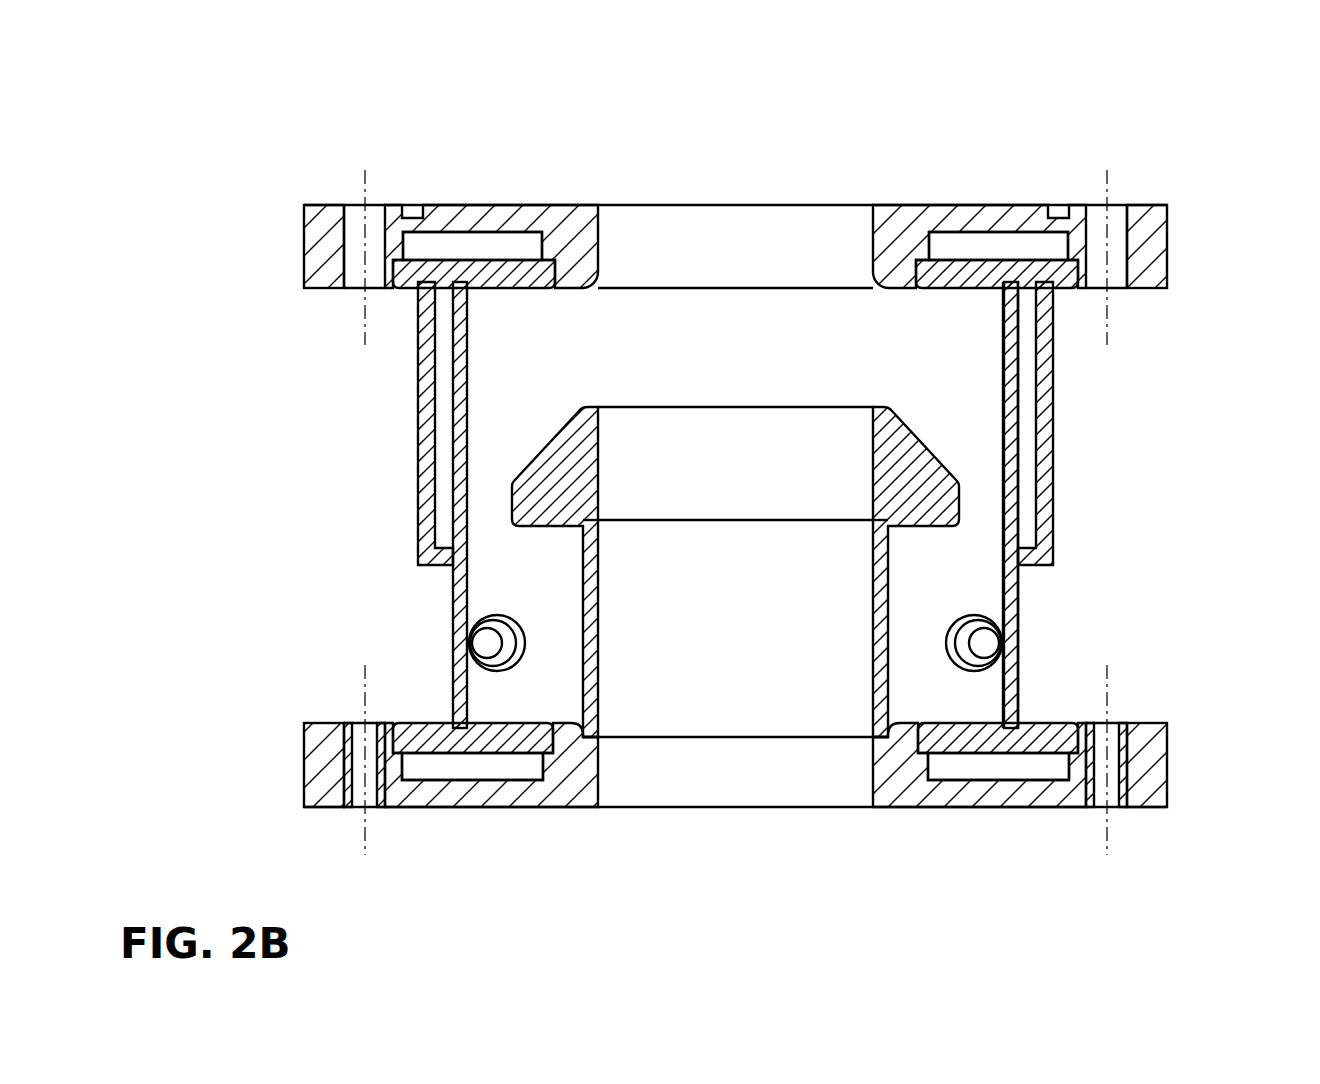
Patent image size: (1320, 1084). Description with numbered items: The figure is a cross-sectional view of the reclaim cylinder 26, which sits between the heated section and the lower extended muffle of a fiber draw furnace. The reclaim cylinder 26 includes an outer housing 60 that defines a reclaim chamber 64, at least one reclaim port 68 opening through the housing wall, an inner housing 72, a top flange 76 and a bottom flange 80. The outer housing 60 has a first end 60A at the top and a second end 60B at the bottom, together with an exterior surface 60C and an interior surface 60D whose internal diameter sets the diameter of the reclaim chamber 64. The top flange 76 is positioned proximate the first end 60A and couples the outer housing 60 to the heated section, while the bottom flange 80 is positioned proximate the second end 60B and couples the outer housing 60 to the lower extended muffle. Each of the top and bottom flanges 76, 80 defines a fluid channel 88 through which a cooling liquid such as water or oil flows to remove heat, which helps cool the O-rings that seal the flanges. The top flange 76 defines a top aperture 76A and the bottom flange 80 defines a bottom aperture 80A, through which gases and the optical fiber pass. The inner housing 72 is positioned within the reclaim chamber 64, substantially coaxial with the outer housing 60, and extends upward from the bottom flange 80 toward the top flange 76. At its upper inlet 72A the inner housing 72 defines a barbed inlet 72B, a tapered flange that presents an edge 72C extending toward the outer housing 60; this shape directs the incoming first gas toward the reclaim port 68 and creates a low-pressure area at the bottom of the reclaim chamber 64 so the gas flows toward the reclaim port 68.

The reclaim cylinder 26 is at (1015, 130).
The outer housing 60 is at (767, 505).
The first end of the outer housing 60A is at (413, 331).
The second end of the outer housing 60B is at (1021, 703).
The exterior surface of the outer housing 60C is at (1018, 592).
The interior surface of the outer housing 60D is at (1003, 565).
The reclaim chamber 64 is at (928, 377).
The reclaim port 68 is at (488, 643).
The inner housing 72 is at (857, 530).
The inlet of the inner housing 72A is at (751, 408).
The barbed inlet 72B is at (538, 491).
The edge of the barbed inlet 72C is at (962, 497).
The top flange 76 is at (735, 190).
The top aperture 76A is at (722, 232).
The bottom flange 80 is at (735, 822).
The bottom aperture 80A is at (771, 782).
The fluid channel 88 is at (489, 250).